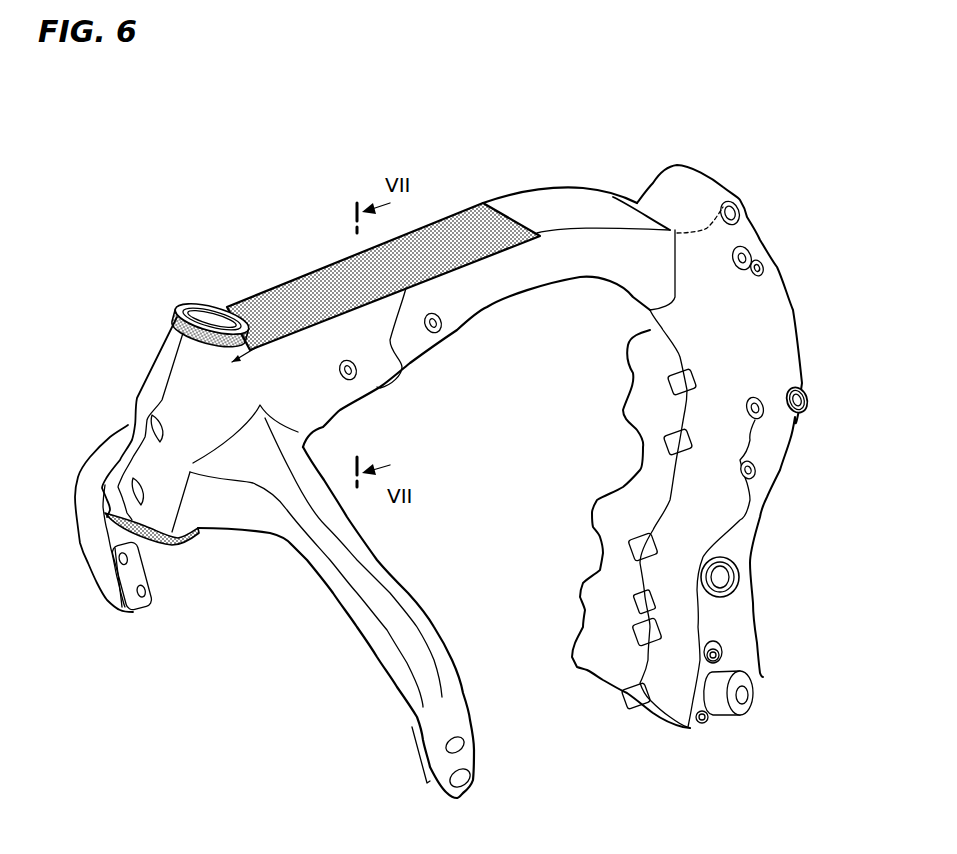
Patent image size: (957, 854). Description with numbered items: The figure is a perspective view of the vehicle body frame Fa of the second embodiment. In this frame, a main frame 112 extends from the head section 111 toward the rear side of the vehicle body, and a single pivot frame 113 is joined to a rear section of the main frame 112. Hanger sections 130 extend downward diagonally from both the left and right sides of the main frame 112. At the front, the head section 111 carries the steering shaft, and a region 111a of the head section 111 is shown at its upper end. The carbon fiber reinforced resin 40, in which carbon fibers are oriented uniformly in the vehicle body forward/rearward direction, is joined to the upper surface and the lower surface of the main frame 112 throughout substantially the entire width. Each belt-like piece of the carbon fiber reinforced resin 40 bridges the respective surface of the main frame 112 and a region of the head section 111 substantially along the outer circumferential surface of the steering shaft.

The vehicle body frame Fa is at (498, 143).
The carbon fiber reinforced resin 40 is at (463, 217).
The head section 111 is at (162, 365).
The head tube upper end collar 111a is at (208, 303).
The main frame 112 is at (380, 390).
The pivot frame 113 is at (710, 507).
The hanger sections 130 is at (98, 560).